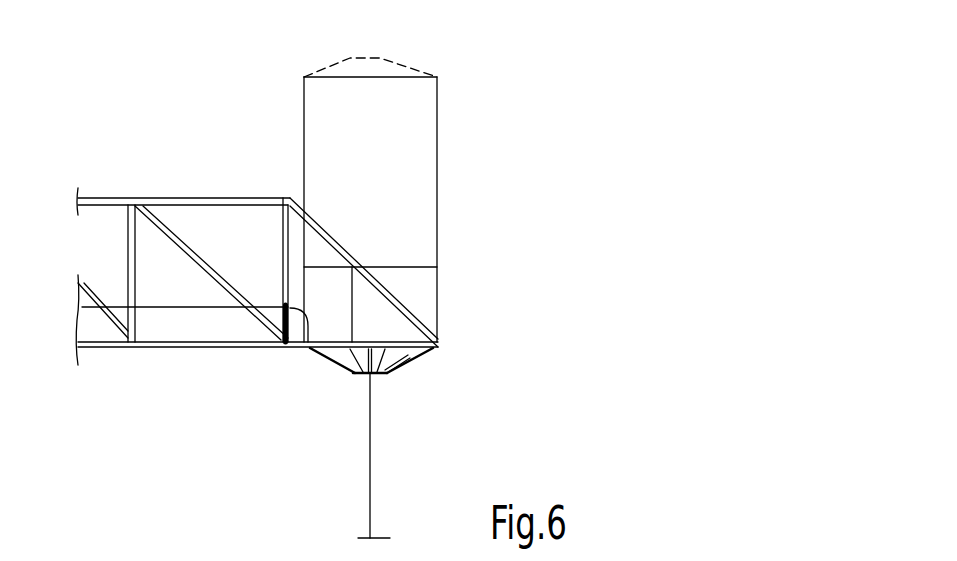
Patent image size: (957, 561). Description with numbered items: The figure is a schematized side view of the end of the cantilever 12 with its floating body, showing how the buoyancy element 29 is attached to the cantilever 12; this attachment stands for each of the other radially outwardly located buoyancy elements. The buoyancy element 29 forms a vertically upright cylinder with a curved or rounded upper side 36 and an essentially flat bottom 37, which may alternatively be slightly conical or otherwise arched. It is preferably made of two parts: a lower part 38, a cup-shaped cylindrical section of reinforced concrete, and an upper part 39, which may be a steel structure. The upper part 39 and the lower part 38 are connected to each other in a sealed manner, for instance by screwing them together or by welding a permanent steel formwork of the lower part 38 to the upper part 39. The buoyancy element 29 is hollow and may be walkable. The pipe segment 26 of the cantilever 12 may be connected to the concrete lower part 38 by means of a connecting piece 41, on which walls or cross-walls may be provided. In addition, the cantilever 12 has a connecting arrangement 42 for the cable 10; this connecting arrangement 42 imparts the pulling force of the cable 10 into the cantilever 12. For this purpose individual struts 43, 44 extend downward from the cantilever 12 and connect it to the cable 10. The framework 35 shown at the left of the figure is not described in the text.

The cable 10 is at (370, 480).
The cantilever 12 is at (240, 112).
The pipe segment 26 is at (170, 305).
The buoyancy element 29 is at (485, 93).
The truss framework 35 is at (162, 180).
The upper side 36 is at (372, 62).
The bottom 37 is at (378, 343).
The lower part 38 is at (428, 287).
The upper part 39 is at (422, 170).
The connecting piece 41 is at (303, 350).
The connecting arrangement 42 is at (355, 382).
The strut 43 is at (407, 363).
The strut 44 is at (332, 366).